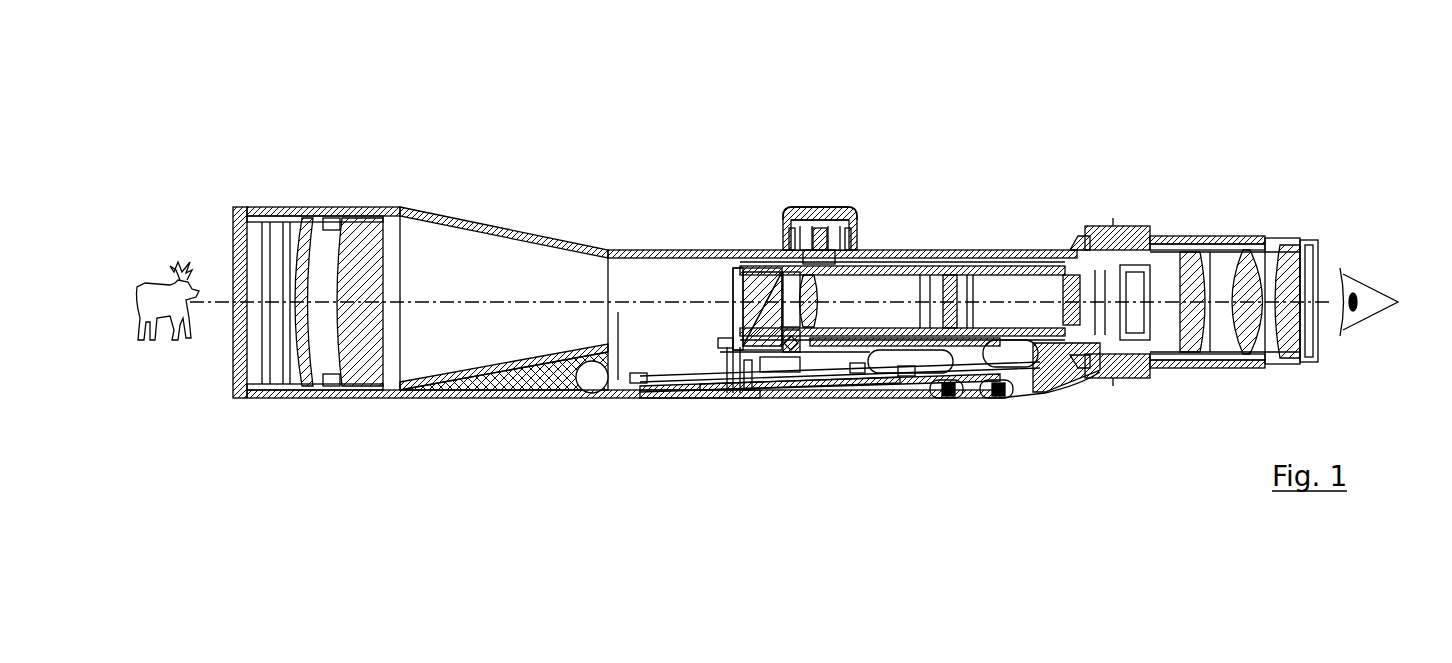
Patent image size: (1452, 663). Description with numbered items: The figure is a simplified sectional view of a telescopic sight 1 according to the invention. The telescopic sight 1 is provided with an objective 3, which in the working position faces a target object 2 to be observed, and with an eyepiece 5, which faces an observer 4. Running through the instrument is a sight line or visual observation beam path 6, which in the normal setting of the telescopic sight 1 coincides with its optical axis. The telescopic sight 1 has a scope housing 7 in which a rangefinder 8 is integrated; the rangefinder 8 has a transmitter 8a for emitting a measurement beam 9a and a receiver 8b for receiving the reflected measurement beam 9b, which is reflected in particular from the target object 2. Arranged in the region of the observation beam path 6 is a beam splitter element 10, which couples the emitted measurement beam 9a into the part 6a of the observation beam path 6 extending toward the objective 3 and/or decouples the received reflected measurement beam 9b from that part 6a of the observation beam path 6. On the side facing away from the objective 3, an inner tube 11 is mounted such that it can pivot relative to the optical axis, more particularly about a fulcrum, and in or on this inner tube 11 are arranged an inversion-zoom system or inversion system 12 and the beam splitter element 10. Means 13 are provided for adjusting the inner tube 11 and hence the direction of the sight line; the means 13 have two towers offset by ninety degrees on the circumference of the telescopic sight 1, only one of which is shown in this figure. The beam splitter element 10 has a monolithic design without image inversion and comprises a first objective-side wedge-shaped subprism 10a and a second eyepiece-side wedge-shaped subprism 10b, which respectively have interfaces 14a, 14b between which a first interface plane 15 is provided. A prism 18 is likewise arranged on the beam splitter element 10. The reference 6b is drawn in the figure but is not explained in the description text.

The telescopic sight 1 is at (1185, 187).
The target object 2 is at (167, 300).
The objective 3 is at (341, 200).
The observer 4 is at (1352, 263).
The eyepiece 5 is at (1270, 228).
The observation beam path 6 is at (497, 300).
The part of the observation beam path extending toward the objective 6a is at (640, 323).
The second intermediate image plane 6b is at (1012, 287).
The scope housing 7 is at (470, 210).
The rangefinder 8 is at (818, 403).
The transmitter 8a is at (803, 398).
The receiver 8b is at (697, 400).
The emitted measurement beam 9a is at (787, 400).
The reflected measurement beam 9b is at (758, 358).
The beam splitter element 10 is at (800, 207).
The first objective-side wedge-shaped subprism 10a is at (736, 282).
The second eyepiece-side wedge-shaped subprism 10b is at (818, 212).
The inner tube 11 is at (912, 272).
The inversion system 12 is at (953, 257).
The means for adjusting the inner tube 13 is at (866, 200).
The interface of the first subprism 14a is at (785, 378).
The interface of the second subprism 14b is at (747, 202).
The first interface plane 15 is at (790, 191).
The prism 18 is at (775, 360).